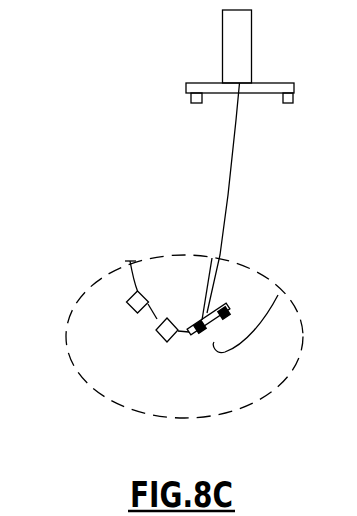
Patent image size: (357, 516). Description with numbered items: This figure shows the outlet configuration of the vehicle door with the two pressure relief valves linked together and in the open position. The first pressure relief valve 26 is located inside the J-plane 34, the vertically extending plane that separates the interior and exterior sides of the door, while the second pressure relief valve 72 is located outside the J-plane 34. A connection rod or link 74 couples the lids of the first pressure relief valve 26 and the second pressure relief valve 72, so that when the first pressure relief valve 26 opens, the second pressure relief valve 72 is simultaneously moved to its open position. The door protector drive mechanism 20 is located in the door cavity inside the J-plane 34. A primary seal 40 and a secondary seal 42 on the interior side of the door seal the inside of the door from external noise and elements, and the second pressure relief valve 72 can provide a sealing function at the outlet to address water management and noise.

The door protector drive mechanism 20 is at (230, 43).
The first pressure relief valve 26 is at (268, 83).
The connection rod/link 74 is at (233, 153).
The J-plane 34 is at (208, 316).
The second pressure relief valve 72 is at (230, 306).
The secondary seal 42 is at (127, 302).
The primary seal 40 is at (156, 337).